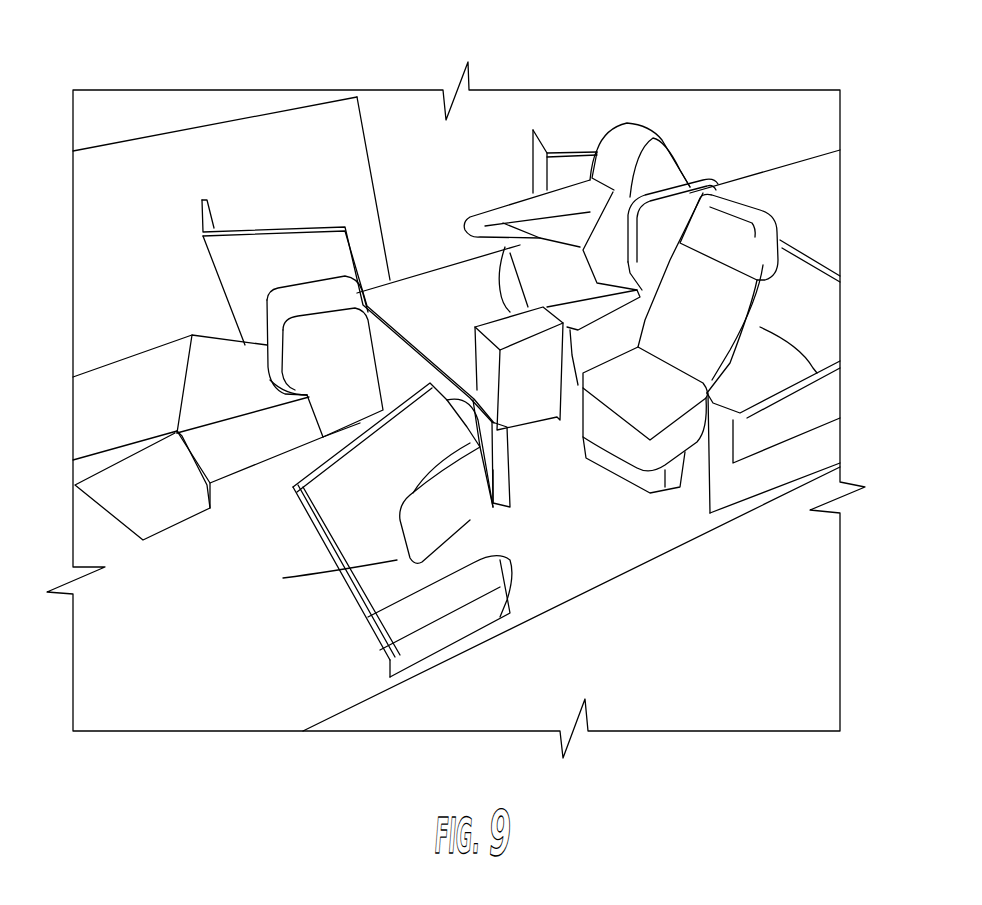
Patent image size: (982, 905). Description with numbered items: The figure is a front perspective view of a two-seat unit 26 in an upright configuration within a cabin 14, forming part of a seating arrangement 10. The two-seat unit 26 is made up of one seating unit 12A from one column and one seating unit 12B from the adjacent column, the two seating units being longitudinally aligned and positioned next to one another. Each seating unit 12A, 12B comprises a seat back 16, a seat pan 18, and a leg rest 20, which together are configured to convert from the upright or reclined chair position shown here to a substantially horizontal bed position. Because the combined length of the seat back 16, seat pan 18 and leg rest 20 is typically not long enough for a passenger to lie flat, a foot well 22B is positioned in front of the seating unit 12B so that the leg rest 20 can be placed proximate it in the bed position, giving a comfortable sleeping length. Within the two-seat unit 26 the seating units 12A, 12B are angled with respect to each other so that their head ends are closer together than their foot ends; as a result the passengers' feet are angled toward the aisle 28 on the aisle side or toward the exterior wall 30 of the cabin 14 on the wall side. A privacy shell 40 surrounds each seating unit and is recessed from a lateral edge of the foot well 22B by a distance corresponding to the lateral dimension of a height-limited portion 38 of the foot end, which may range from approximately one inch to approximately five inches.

The seating arrangement 10 is at (696, 134).
The seating unit 12A is at (653, 177).
The seating unit 12B is at (690, 320).
The cabin 14 is at (405, 125).
The seat back 16 is at (742, 238).
The seat pan 18 is at (673, 417).
The leg rest 20 is at (620, 450).
The foot well 22B is at (418, 551).
The two-seat unit 26 is at (700, 183).
The aisle 28 is at (886, 449).
The exterior wall 30 is at (193, 148).
The height-limited portion 38 is at (417, 610).
The privacy shell 40 is at (400, 567).